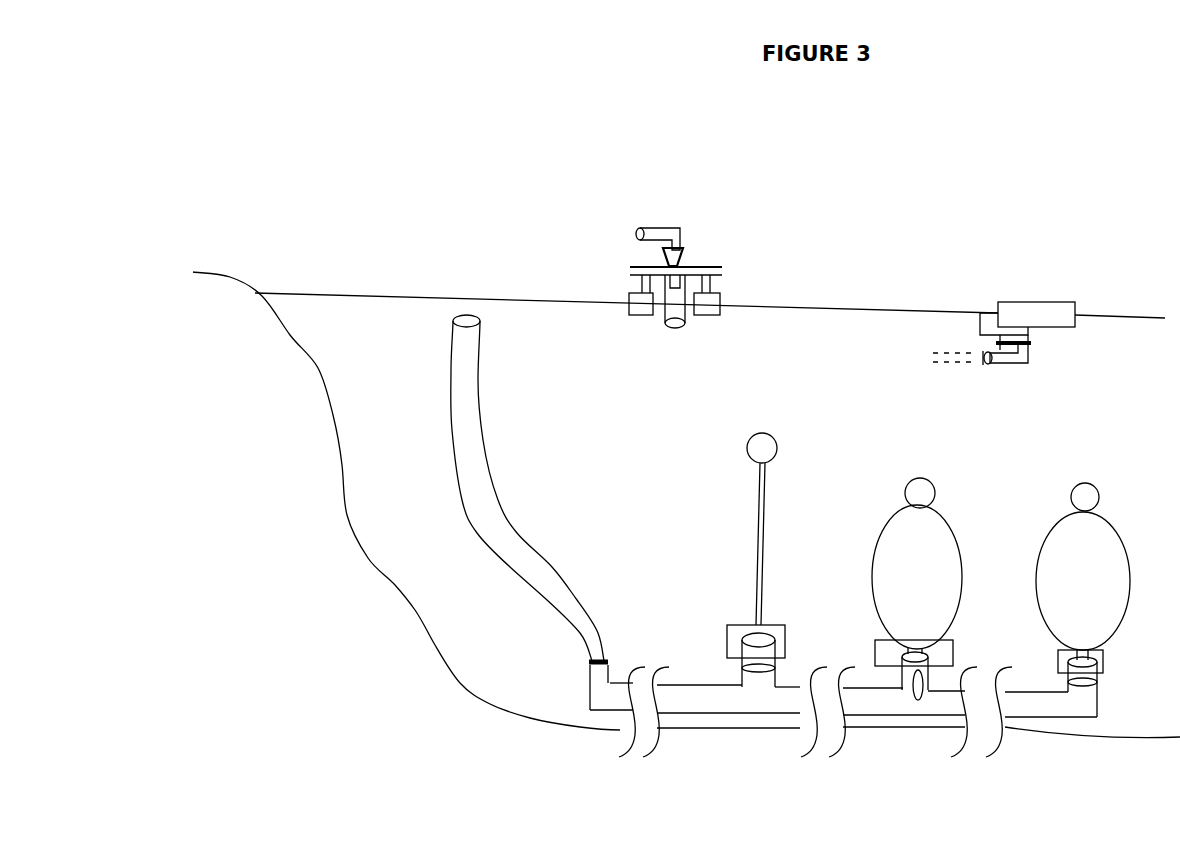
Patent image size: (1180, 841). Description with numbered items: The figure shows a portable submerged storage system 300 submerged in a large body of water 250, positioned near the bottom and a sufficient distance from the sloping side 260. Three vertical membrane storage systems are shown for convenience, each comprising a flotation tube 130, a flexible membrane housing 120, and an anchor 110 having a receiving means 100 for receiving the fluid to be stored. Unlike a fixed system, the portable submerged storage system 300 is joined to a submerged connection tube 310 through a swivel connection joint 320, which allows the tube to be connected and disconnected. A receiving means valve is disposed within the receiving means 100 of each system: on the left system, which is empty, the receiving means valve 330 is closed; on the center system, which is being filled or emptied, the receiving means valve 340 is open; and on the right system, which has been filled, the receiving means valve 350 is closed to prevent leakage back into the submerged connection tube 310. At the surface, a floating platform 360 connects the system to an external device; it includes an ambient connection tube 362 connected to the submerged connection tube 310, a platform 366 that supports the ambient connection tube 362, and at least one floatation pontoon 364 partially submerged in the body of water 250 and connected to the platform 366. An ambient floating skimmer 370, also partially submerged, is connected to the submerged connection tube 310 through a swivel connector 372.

The receiving means 100 is at (905, 652).
The anchor 110 is at (728, 632).
The flexible membrane housing 120 is at (750, 529).
The flotation tube 130 is at (745, 449).
The body of water 250 is at (580, 347).
The sloping side 260 is at (416, 627).
The portable submerged storage system 300 is at (884, 247).
The submerged connection tube 310 is at (452, 367).
The swivel connection joint 320 is at (590, 666).
The receiving means valve 330 is at (753, 676).
The receiving means valve 340 is at (909, 698).
The receiving means valve 350 is at (1078, 692).
The floating platform 360 is at (612, 222).
The ambient connection tube 362 is at (652, 223).
The floatation pontoon 364 is at (728, 298).
The platform 366 is at (706, 262).
The ambient floating skimmer 370 is at (1073, 285).
The swivel connector 372 is at (1032, 364).